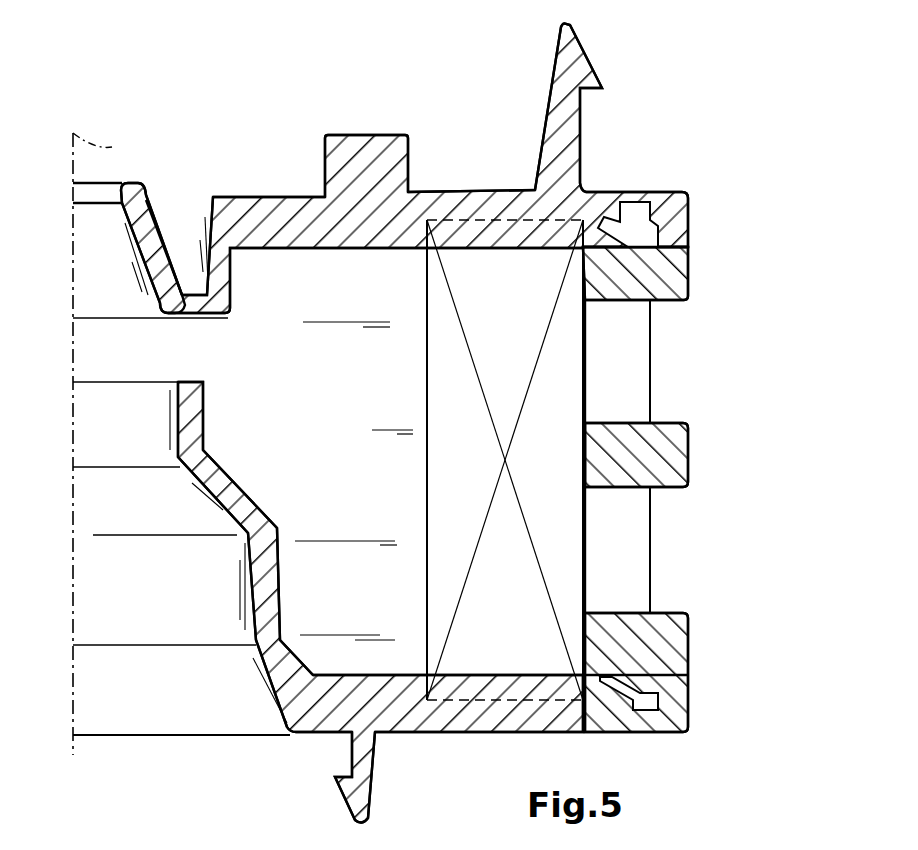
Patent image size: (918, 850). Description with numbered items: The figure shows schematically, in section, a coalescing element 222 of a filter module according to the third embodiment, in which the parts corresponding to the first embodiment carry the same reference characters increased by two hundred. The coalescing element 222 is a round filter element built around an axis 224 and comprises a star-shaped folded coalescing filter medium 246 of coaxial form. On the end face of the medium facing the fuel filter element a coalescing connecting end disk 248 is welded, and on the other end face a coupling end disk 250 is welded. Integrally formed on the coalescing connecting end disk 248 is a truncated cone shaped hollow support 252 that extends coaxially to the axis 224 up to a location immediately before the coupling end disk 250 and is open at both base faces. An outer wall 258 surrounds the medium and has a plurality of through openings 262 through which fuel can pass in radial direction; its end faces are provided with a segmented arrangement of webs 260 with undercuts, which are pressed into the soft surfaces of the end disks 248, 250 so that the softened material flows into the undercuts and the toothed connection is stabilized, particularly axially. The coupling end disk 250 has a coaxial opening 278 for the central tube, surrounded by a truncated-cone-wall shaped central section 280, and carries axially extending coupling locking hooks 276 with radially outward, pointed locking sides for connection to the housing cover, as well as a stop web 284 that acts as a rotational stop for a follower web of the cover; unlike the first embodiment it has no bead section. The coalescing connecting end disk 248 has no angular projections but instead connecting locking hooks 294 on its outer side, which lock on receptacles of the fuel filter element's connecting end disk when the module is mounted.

The coalescing element 222 is at (712, 158).
The axis 224 is at (103, 152).
The coalescing filter medium 246 is at (570, 542).
The coalescing connecting end disk 248 is at (463, 718).
The coupling end disk 250 is at (272, 188).
The truncated cone shaped hollow support 252 is at (222, 483).
The outer wall 258 is at (668, 421).
The webs 260 is at (636, 205).
The through openings 262 is at (640, 337).
The coupling locking hooks 276 is at (583, 75).
The opening 278 is at (102, 190).
The central section 280 is at (150, 227).
The stop web 284 is at (400, 158).
The connecting locking hooks 294 is at (358, 798).